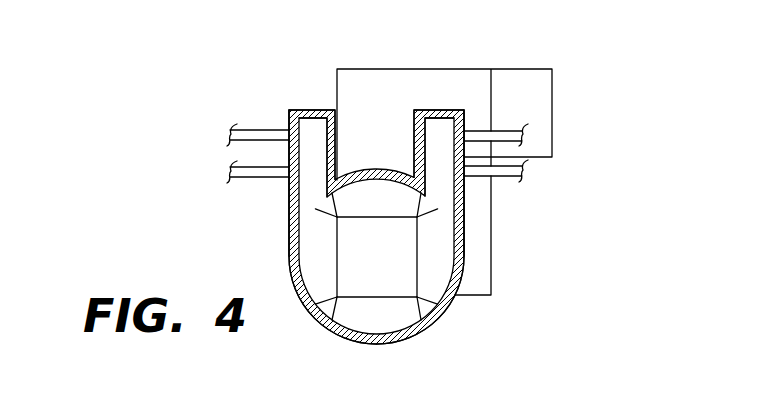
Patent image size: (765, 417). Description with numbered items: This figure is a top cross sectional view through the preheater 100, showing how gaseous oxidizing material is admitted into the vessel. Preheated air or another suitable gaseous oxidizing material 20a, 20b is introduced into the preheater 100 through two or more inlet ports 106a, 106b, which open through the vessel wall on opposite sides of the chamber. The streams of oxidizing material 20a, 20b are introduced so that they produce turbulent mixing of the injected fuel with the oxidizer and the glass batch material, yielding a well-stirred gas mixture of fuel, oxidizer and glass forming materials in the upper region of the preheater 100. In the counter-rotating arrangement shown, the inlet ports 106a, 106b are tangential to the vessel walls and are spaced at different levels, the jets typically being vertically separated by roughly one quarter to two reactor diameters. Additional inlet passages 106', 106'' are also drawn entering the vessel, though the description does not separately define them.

The preheater 100 is at (446, 330).
The gaseous oxidizing material 20a is at (313, 95).
The gaseous oxidizing material 20b is at (440, 95).
The first cooling conduit 106' is at (379, 130).
The second cooling conduit 106'' is at (377, 168).
The inlet port 106a is at (280, 205).
The inlet port 106b is at (477, 205).